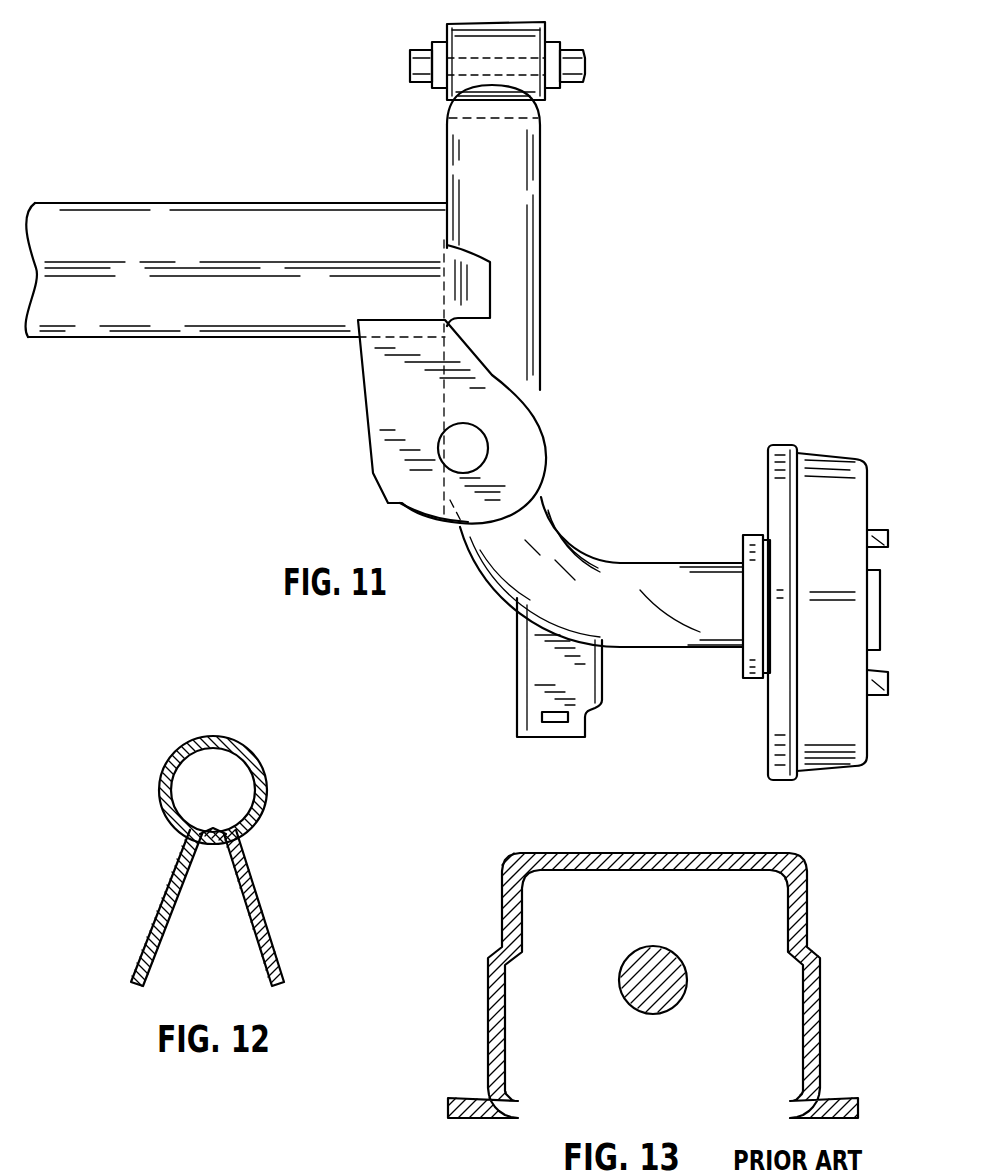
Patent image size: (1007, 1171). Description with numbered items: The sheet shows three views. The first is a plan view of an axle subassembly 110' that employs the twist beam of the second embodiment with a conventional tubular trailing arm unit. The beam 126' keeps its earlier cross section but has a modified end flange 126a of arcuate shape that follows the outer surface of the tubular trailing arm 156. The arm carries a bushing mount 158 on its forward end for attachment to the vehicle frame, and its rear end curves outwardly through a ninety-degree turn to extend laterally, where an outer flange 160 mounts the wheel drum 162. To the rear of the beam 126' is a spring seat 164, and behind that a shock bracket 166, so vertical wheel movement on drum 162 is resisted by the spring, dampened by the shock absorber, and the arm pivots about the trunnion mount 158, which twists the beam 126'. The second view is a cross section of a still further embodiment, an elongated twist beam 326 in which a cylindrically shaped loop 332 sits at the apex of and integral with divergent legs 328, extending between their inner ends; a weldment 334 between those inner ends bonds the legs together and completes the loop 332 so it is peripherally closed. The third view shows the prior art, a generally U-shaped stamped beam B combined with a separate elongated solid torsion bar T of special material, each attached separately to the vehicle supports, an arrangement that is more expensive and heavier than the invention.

In FIG. 11, the axle subassembly 110' is at (146, 221).
In FIG. 11, the beam 126' is at (237, 245).
In FIG. 11, the end flange 126a is at (483, 300).
In FIG. 11, the tubular trailing arm 156 is at (523, 352).
In FIG. 11, the bushing mount 158 is at (533, 32).
In FIG. 11, the outer flange 160 is at (745, 549).
In FIG. 11, the wheel drum 162 is at (866, 462).
In FIG. 11, the spring seat 164 is at (373, 437).
In FIG. 11, the shock bracket 166 is at (520, 675).
In FIG. 12, the elongated twist beam 326 is at (273, 813).
In FIG. 12, the divergent legs 328 is at (142, 940).
In FIG. 12, the loop 332 is at (233, 748).
In FIG. 12, the weldment 334 is at (207, 850).
In FIG. 13, the torsion bar T is at (688, 1000).
In FIG. 13, the beam B is at (822, 1006).